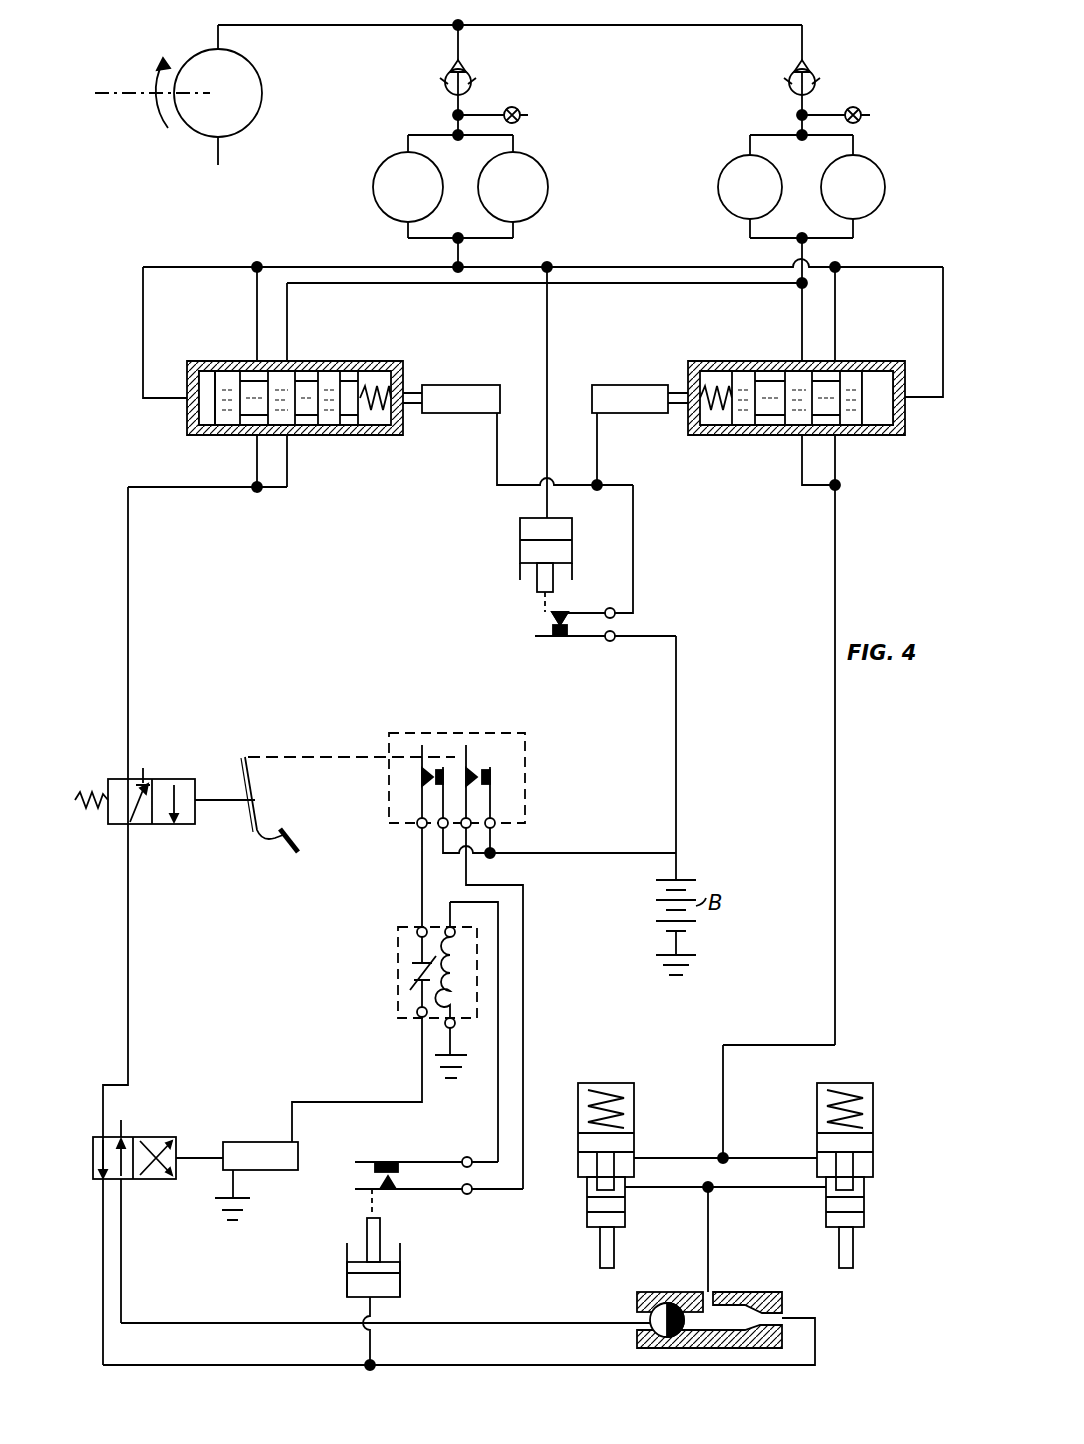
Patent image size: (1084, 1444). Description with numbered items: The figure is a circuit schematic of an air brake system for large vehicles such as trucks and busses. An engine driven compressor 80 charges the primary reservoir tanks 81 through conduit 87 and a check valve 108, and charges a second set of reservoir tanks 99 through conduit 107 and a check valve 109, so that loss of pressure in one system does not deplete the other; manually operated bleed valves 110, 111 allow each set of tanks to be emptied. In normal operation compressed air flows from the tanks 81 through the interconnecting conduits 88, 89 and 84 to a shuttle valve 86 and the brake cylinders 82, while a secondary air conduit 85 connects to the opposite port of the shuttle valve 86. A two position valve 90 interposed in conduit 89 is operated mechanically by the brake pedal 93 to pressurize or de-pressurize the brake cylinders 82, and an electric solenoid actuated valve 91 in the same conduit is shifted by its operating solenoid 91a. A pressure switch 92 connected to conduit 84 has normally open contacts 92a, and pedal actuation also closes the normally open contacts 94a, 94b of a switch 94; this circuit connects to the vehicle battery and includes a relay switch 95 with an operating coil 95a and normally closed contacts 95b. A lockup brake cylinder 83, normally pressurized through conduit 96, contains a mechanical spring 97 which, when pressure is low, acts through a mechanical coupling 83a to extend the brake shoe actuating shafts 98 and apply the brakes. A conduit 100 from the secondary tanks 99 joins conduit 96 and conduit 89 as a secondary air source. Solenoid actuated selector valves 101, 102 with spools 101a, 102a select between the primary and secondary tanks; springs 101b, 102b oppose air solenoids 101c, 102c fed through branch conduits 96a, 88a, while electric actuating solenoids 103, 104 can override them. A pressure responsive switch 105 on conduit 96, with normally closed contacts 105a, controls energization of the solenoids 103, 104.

The engine driven compressor 80 is at (262, 108).
The reservoir tanks 81 is at (378, 164).
The brake cylinders 82 is at (585, 1220).
The lockup brake cylinder 83 is at (730, 1168).
The mechanical coupling 83a is at (587, 1168).
The primary air conduit 84 is at (516, 1352).
The secondary air conduit 85 is at (490, 1310).
The shuttle valve 86 is at (786, 1274).
The conduit 87 is at (462, 48).
The conduit 88 is at (356, 262).
The branch conduit 88a is at (116, 320).
The conduit 89 is at (134, 648).
The two position valve 90 is at (172, 764).
The electric solenoid actuated valve 91 is at (150, 1182).
The operating solenoid 91a is at (266, 1122).
The pressure switch 92 is at (402, 1250).
The normally open set of contacts 92a is at (340, 1176).
The brake pedal 93 is at (264, 792).
The switch 94 is at (507, 941).
The normally open switch contact 94a is at (412, 774).
The normally open switch contact 94b is at (482, 762).
The relay switch 95 is at (460, 1032).
The operating coil 95a is at (462, 964).
The normally closed contacts 95b is at (392, 940).
The conduit 96 is at (656, 262).
The branch conduit 96a is at (928, 310).
The mechanical spring 97 is at (636, 1100).
The brake shoe actuating shafts 98 is at (616, 1258).
The second set of reservoir tanks 99 is at (714, 188).
The conduit 100 is at (812, 250).
The solenoid actuated selector valve 101 is at (801, 405).
The spool 101a is at (792, 438).
The mechanical spring 101b is at (715, 430).
The air solenoid 101c is at (880, 430).
The solenoid actuated selector valve 102 is at (287, 410).
The spool 102a is at (296, 438).
The mechanical spring 102b is at (372, 430).
The air solenoid 102c is at (230, 438).
The electric actuating solenoid 103 is at (652, 374).
The electric actuating solenoid 104 is at (494, 362).
The pressure responsive switch 105 is at (518, 540).
The normally closed contacts 105a is at (530, 634).
The conduit 107 is at (806, 48).
The check valve 108 is at (471, 90).
The check valve 109 is at (815, 90).
The manually operated bleed valve 110 is at (516, 125).
The manually operated bleed valve 111 is at (858, 124).